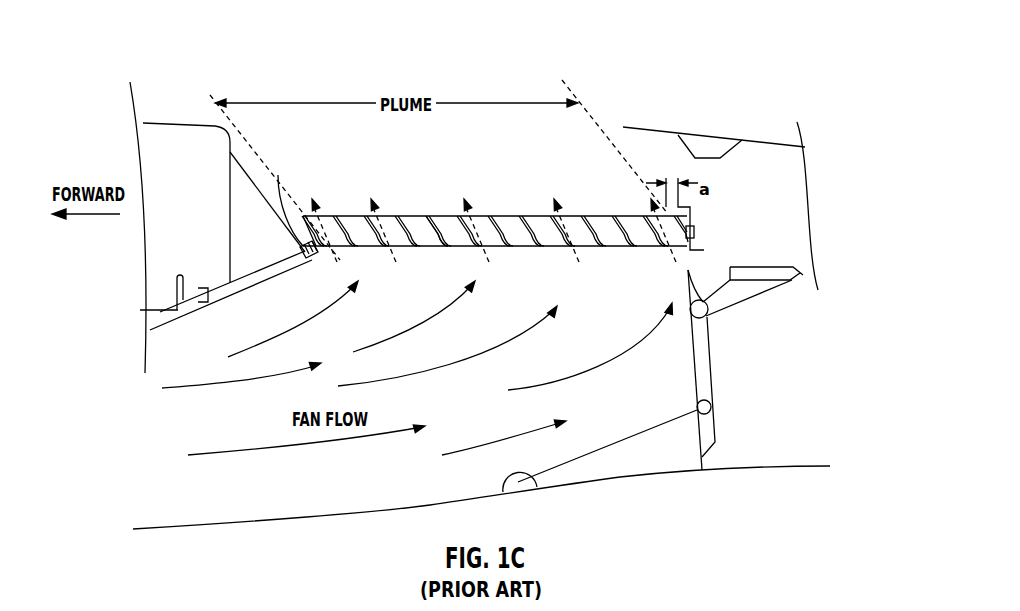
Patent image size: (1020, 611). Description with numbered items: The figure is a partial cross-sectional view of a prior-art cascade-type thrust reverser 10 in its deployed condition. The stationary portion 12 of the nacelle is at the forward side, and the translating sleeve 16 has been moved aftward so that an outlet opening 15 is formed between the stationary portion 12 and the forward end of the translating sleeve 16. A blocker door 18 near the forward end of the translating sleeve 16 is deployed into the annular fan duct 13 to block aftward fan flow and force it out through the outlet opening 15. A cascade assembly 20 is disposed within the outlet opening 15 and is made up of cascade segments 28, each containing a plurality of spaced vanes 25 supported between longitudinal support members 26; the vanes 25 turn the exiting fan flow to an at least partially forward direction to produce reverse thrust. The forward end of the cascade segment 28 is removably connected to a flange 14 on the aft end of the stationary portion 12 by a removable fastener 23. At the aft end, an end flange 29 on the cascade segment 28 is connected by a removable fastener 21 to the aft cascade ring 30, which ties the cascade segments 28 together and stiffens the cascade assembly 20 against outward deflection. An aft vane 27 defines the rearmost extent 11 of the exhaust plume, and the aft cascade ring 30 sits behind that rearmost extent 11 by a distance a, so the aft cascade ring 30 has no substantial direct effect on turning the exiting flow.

The cascade-type thrust reverser 10 is at (620, 57).
The rearmost extent of the exhaust plume 11 is at (588, 114).
The stationary portion of the nacelle 12 is at (217, 227).
The annular fan duct 13 is at (464, 354).
The flange 14 is at (318, 246).
The outlet opening 15 is at (434, 166).
The translating sleeve 16 is at (718, 133).
The blocker door 18 is at (710, 355).
The cascade assembly 20 is at (505, 205).
The removable fastener 21 is at (697, 232).
The removable fastener 23 is at (278, 175).
The vane 25 is at (440, 232).
The longitudinal support member 26 is at (483, 239).
The aft vane 27 is at (680, 242).
The cascade segment 28 is at (410, 216).
The end flange 29 is at (686, 250).
The aft cascade ring 30 is at (694, 213).